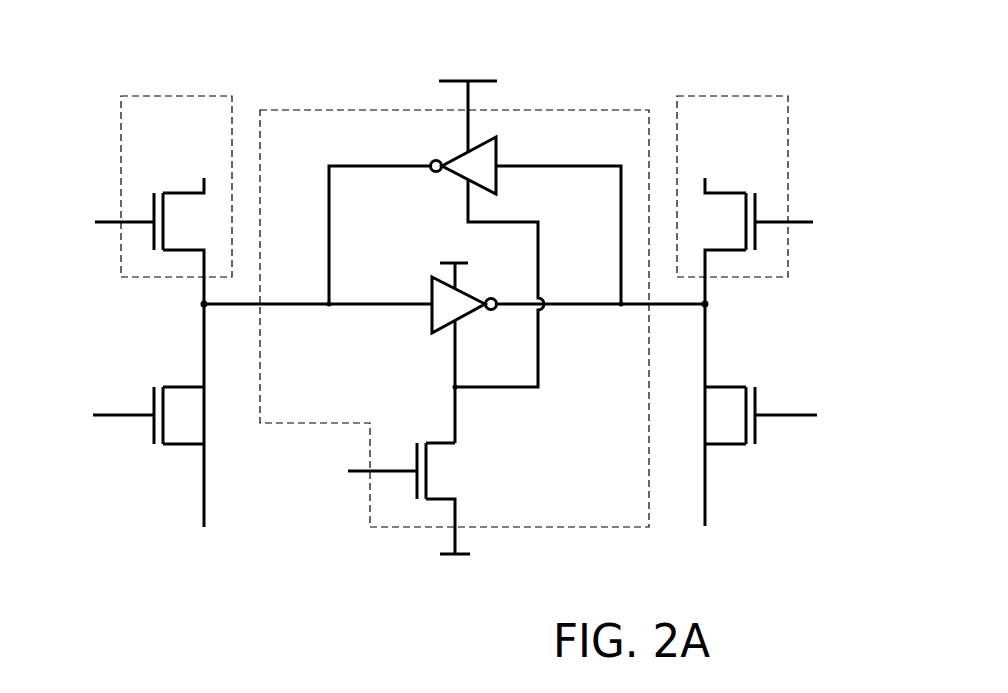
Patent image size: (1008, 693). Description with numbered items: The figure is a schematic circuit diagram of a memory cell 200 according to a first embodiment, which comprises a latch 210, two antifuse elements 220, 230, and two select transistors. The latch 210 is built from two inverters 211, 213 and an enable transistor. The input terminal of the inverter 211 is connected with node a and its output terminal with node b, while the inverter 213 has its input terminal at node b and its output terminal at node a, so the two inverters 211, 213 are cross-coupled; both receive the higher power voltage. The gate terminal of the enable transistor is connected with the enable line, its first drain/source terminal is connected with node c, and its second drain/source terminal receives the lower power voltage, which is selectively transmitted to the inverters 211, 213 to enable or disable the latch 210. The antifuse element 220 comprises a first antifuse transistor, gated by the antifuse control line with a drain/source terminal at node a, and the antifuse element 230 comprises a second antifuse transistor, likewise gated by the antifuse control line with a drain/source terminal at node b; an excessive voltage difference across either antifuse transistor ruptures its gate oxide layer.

The memory cell 200 is at (126, 551).
The latch 210 is at (623, 510).
The inverter 211 is at (432, 325).
The inverter 213 is at (498, 143).
The antifuse element 220 is at (197, 132).
The antifuse element 230 is at (755, 132).